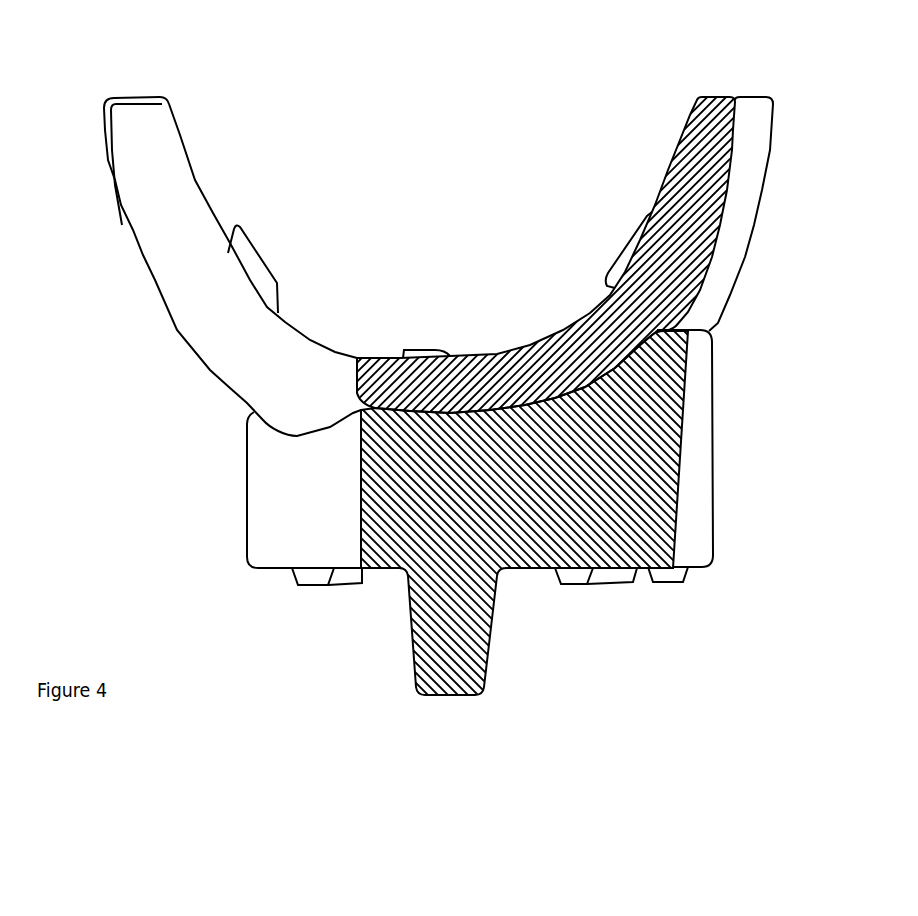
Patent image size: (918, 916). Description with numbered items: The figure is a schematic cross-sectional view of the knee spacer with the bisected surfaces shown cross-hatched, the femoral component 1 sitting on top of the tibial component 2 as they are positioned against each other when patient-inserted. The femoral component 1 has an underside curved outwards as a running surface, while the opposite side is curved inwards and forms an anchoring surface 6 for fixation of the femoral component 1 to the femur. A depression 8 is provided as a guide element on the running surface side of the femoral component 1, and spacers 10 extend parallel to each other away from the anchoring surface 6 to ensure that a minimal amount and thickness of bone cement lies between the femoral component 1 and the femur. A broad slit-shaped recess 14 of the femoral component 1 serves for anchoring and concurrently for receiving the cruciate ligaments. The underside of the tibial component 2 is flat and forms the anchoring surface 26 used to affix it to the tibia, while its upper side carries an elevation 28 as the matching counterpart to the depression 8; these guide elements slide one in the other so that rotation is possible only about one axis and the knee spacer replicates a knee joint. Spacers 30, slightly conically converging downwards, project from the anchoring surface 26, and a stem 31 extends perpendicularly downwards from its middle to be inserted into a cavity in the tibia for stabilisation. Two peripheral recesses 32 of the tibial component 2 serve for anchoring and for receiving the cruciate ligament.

The femoral component 1 is at (680, 197).
The tibial component 2 is at (557, 482).
The anchoring surface 6 is at (350, 350).
The depression 8 is at (750, 147).
The spacers 10 is at (248, 262).
The recess 14 is at (197, 307).
The anchoring surface 26 is at (388, 575).
The elevation 28 is at (345, 427).
The spacers 30 is at (313, 573).
The stem 31 is at (463, 640).
The recesses 32 is at (299, 500).